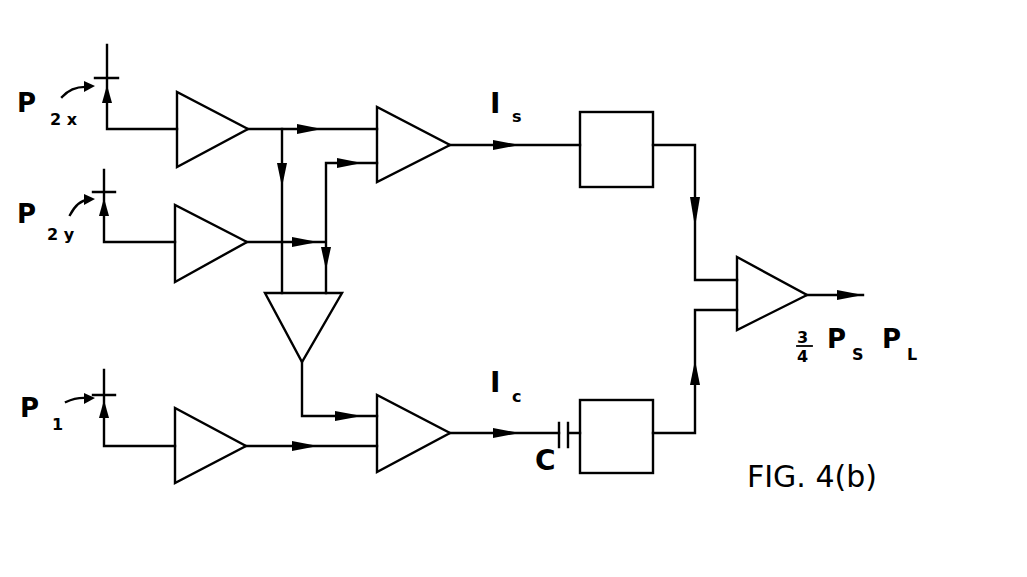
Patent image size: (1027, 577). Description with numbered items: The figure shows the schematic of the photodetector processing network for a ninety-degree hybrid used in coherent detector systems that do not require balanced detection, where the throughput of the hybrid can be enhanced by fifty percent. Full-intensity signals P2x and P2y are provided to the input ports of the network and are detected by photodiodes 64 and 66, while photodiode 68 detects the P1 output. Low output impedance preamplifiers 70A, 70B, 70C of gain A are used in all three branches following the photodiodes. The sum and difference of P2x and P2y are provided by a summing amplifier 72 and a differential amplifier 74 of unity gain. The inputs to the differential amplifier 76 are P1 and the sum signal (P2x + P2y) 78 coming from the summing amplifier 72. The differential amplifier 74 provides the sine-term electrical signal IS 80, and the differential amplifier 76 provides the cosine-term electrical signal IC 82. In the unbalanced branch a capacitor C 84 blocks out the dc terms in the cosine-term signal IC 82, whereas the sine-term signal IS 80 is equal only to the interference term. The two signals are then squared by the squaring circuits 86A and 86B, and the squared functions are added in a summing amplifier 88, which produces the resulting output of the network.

The photodiode 64 is at (118, 78).
The photodiode 66 is at (115, 192).
The photodiode 68 is at (115, 395).
The preamplifier 70A is at (213, 112).
The preamplifier 70B is at (193, 272).
The preamplifier 70C is at (222, 460).
The summing amplifier 72 is at (335, 305).
The differential amplifier 74 is at (400, 118).
The differential amplifier 76 is at (388, 470).
The sum signal (P2x + P2y) 78 is at (345, 412).
The sine-term electrical signal IS 80 is at (505, 150).
The cosine-term electrical signal IC 82 is at (497, 440).
The capacitor C 84 is at (553, 423).
The squaring circuit 86A is at (610, 112).
The squaring circuit 86B is at (600, 475).
The summing amplifier 88 is at (765, 267).